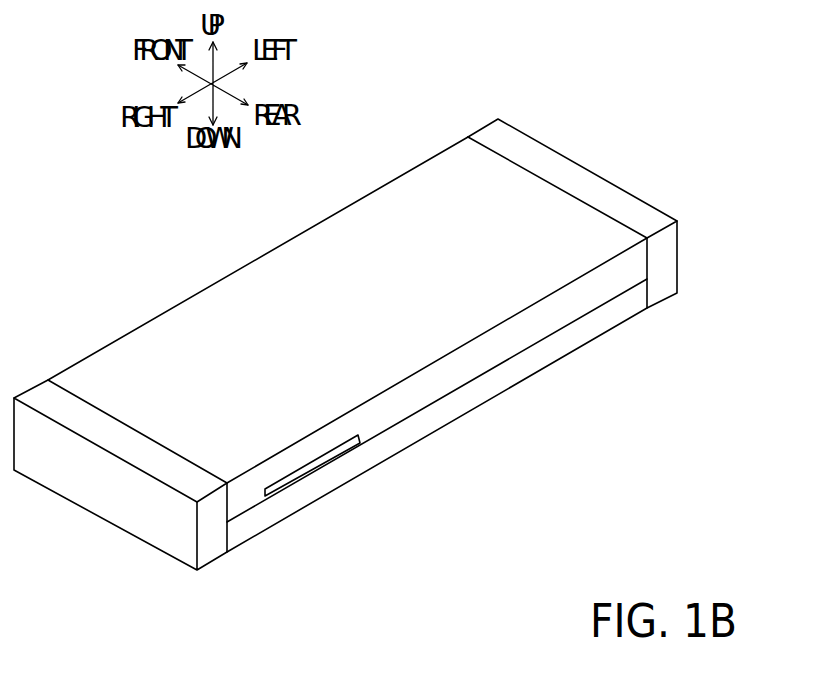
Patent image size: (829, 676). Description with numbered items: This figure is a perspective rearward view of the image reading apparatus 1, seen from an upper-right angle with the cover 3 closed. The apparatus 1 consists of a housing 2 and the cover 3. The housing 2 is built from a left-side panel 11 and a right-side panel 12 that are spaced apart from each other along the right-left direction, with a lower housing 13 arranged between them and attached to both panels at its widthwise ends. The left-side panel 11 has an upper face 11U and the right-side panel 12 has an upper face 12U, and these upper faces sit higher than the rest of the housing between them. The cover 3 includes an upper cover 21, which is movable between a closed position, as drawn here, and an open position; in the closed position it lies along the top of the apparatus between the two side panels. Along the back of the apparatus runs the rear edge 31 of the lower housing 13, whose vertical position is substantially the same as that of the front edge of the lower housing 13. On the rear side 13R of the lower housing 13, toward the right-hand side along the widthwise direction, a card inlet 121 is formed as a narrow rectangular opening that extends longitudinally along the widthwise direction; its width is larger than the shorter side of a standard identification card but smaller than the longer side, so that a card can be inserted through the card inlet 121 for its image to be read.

The image reading apparatus 1 is at (390, 638).
The housing 2 is at (575, 377).
The cover 3 is at (225, 263).
The left-side panel 11 is at (647, 200).
The upper face of the left-side panel 11U is at (598, 187).
The right-side panel 12 is at (140, 528).
The upper face of the right-side panel 12U is at (42, 392).
The lower housing 13 is at (487, 403).
The rear side of the lower housing 13R is at (393, 442).
The upper cover 21 is at (513, 158).
The rear edge of the lower housing 31 is at (438, 397).
The card inlet 121 is at (325, 471).